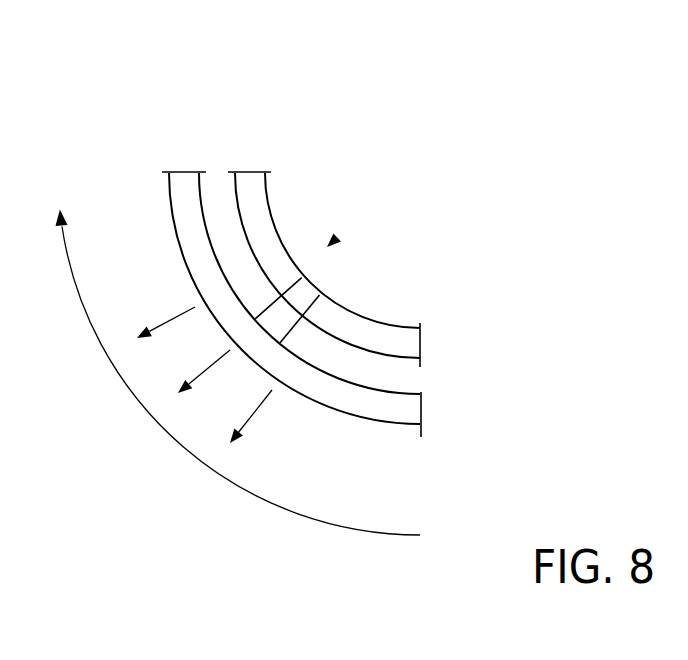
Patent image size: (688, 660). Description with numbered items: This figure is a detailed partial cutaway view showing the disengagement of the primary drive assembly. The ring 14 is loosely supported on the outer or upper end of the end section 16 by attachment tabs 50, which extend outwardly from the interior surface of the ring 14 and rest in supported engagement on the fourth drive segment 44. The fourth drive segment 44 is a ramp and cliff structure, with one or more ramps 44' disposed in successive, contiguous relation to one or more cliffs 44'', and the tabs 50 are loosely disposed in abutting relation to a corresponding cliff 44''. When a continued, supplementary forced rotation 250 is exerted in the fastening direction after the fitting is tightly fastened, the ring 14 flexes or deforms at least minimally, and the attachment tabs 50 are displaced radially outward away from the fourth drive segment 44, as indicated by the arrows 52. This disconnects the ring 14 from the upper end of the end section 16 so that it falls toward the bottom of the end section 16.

The ring 14 is at (403, 411).
The end section 16 is at (250, 183).
The fourth drive segment 44 is at (416, 196).
The ramps 44' is at (431, 333).
The cliffs 44'' is at (294, 205).
The attachment tabs 50 is at (284, 318).
The flow direction arrows 52 is at (163, 326).
The continued forced rotation 250 is at (197, 458).